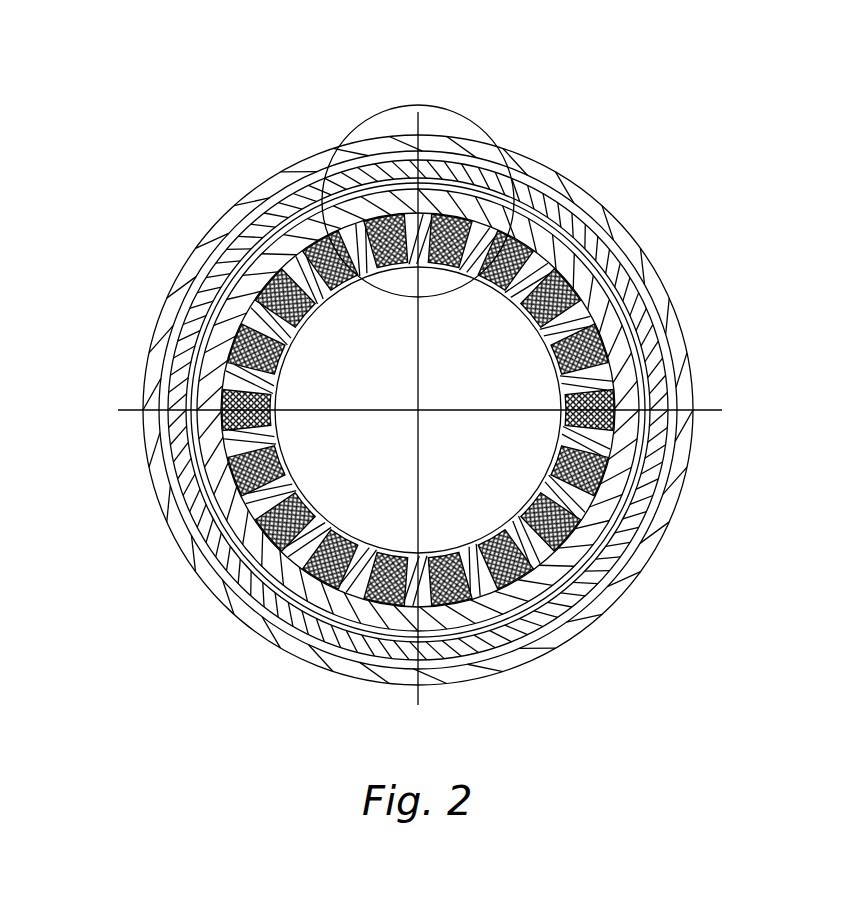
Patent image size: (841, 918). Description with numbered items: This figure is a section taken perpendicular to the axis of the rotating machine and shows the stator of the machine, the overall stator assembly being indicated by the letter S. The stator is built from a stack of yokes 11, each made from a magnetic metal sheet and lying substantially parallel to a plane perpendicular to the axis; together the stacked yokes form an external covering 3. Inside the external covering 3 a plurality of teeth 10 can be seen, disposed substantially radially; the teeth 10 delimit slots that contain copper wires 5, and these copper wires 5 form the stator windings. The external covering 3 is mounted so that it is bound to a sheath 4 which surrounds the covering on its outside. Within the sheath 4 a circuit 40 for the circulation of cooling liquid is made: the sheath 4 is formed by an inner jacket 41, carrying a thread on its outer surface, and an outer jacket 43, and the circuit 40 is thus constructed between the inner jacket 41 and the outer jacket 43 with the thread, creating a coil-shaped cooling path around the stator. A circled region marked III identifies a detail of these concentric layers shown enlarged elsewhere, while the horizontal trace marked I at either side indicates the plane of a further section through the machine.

The stator assembly S is at (406, 388).
The external covering 3 is at (538, 222).
The sheath 4 is at (633, 597).
The copper wires 5 is at (518, 580).
The teeth 10 is at (578, 315).
The stack of yokes 11 is at (575, 262).
The circuit 40 is at (667, 370).
The inner jacket 41 is at (638, 316).
The outer jacket 43 is at (663, 508).
The detail III circle III is at (467, 117).
The section line I- I is at (126, 412).